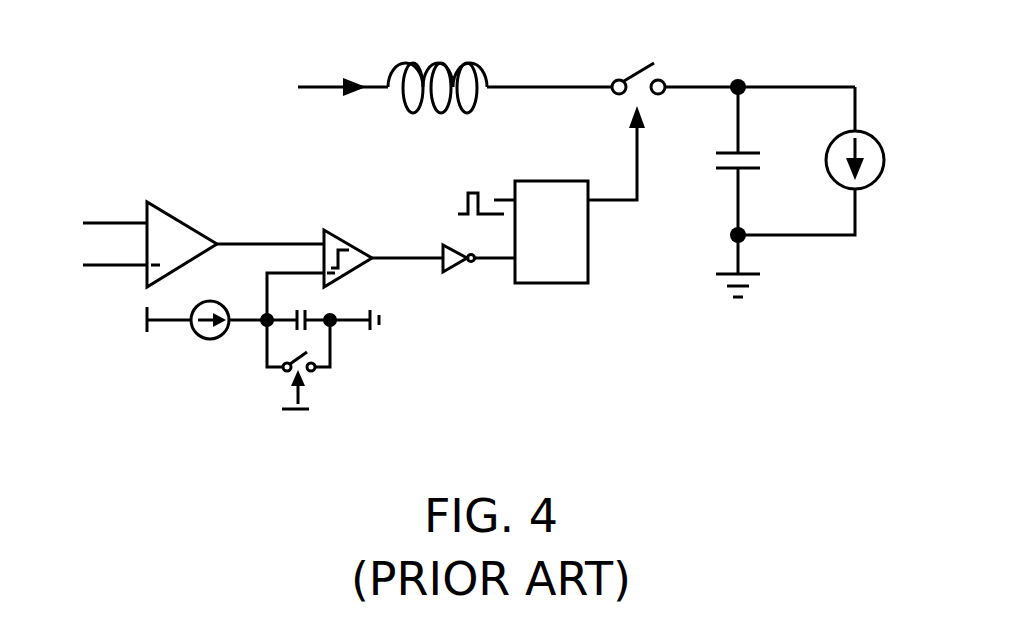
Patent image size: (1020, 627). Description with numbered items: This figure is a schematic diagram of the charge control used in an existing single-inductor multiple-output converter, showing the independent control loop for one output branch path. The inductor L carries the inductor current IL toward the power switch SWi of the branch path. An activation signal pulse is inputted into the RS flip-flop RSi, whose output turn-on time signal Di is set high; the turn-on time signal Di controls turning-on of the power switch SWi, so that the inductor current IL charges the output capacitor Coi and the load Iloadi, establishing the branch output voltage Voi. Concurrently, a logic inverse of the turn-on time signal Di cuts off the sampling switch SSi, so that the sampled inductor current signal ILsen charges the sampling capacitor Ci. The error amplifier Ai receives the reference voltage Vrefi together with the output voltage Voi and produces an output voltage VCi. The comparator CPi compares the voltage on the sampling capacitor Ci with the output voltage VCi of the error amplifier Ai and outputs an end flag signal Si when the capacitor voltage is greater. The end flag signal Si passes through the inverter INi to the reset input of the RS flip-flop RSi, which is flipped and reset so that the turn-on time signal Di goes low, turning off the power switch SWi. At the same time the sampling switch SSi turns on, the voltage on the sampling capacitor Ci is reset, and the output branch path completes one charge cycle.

The inductor L is at (500, 71).
The inductor current IL is at (343, 105).
The power switch SWi is at (675, 65).
The output voltage Voi is at (463, 150).
The output capacitor Coi is at (752, 192).
The load Iloadi is at (836, 161).
The turn-on time signal Di is at (616, 153).
The RS flip-flop RSi is at (523, 256).
The inverter INi is at (479, 280).
The end flag signal Si is at (407, 241).
The comparator CPi is at (350, 250).
The output voltage of error amplifier VCi is at (270, 230).
The reference voltage Vrefi is at (101, 204).
The error amplifier Ai is at (150, 240).
The sampled inductor current signal ILsen is at (207, 332).
The sampling capacitor Ci is at (319, 301).
The sampling switch SSi is at (321, 381).